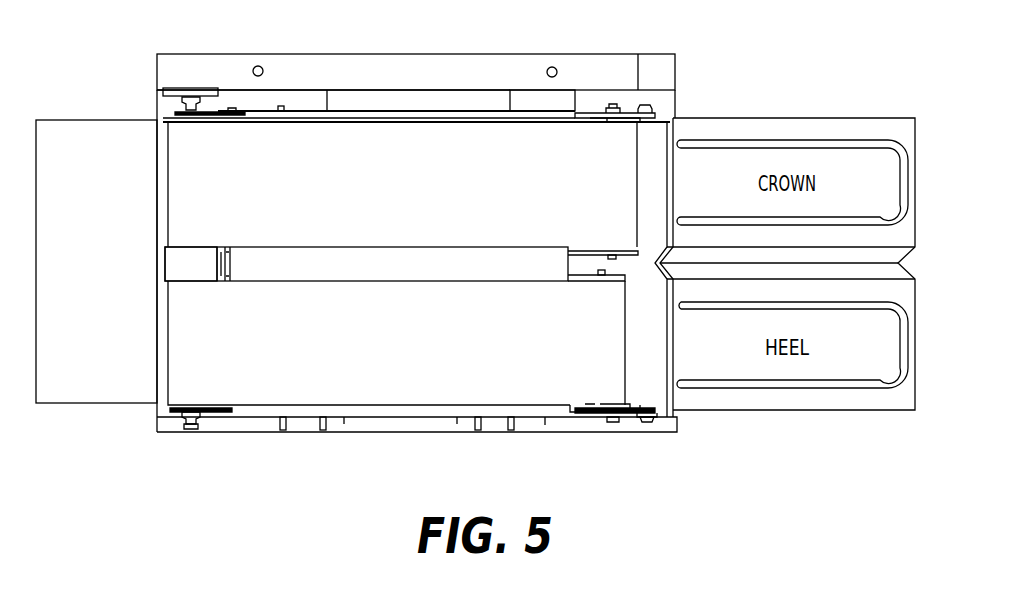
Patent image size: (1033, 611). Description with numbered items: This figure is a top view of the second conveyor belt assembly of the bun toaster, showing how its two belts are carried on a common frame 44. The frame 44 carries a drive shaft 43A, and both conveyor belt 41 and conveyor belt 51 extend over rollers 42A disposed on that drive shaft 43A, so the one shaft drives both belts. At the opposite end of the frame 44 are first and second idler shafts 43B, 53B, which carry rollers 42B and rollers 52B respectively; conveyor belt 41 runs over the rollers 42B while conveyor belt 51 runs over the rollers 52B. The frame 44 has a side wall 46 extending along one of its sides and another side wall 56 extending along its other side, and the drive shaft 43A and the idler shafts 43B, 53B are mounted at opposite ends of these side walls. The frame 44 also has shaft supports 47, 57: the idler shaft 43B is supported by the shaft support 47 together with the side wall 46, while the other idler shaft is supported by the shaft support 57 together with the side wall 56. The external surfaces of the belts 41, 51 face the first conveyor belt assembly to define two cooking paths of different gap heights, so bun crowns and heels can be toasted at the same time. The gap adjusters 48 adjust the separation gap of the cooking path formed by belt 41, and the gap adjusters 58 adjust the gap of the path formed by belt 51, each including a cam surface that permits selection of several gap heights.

The conveyor belt 41 is at (424, 348).
The conveyor belt 51 is at (424, 196).
The frame 44 is at (243, 263).
The rollers 42A is at (165, 118).
The rollers 42B is at (597, 407).
The drive shaft 43A is at (191, 430).
The first idler shaft 43B is at (613, 423).
The side wall 46 is at (545, 425).
The shaft support 47 is at (570, 283).
The gap adjusters 48 is at (323, 432).
The gap adjusters 58 is at (283, 432).
The rollers 52B is at (608, 124).
The second idler shaft 53B is at (612, 104).
The side wall 56 is at (525, 104).
The shaft support 57 is at (575, 250).